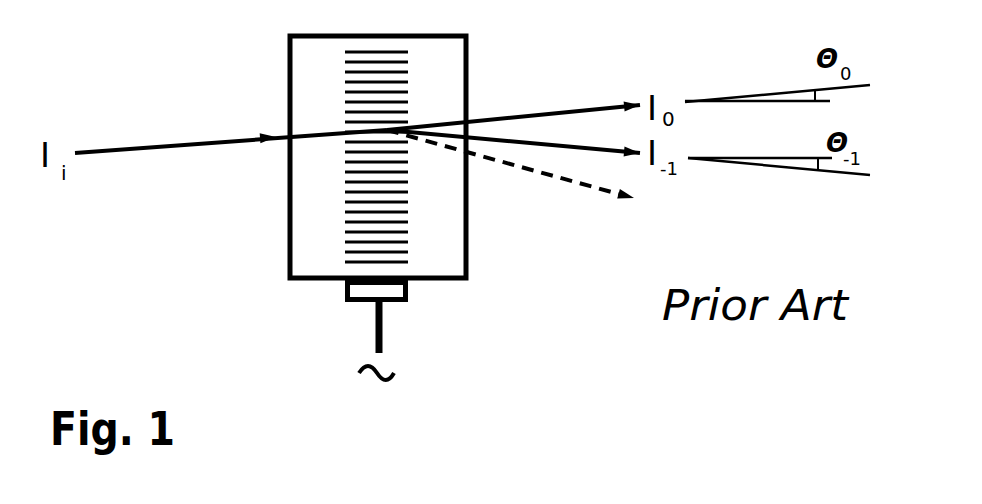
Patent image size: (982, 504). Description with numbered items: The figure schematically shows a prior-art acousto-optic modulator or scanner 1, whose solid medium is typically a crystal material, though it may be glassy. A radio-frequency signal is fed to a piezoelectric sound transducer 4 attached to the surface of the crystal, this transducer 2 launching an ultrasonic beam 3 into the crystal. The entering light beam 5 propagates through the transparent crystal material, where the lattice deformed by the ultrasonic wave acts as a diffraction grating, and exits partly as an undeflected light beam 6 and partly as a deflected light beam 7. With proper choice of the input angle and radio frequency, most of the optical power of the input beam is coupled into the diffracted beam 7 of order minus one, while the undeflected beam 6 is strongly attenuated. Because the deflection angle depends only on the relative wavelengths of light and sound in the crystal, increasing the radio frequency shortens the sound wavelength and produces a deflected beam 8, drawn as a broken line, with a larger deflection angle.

The acousto-optic modulator or scanner 1 is at (305, 57).
The transducer 2 is at (397, 289).
The ultrasonic beam 3 is at (362, 239).
The piezoelectric sound transducer 4 is at (375, 364).
The entering light beam 5 is at (231, 130).
The undeflected light beam 6 is at (513, 102).
The deflected light beam 7 is at (513, 137).
The deflected beam with larger deflection angle 8 is at (510, 164).